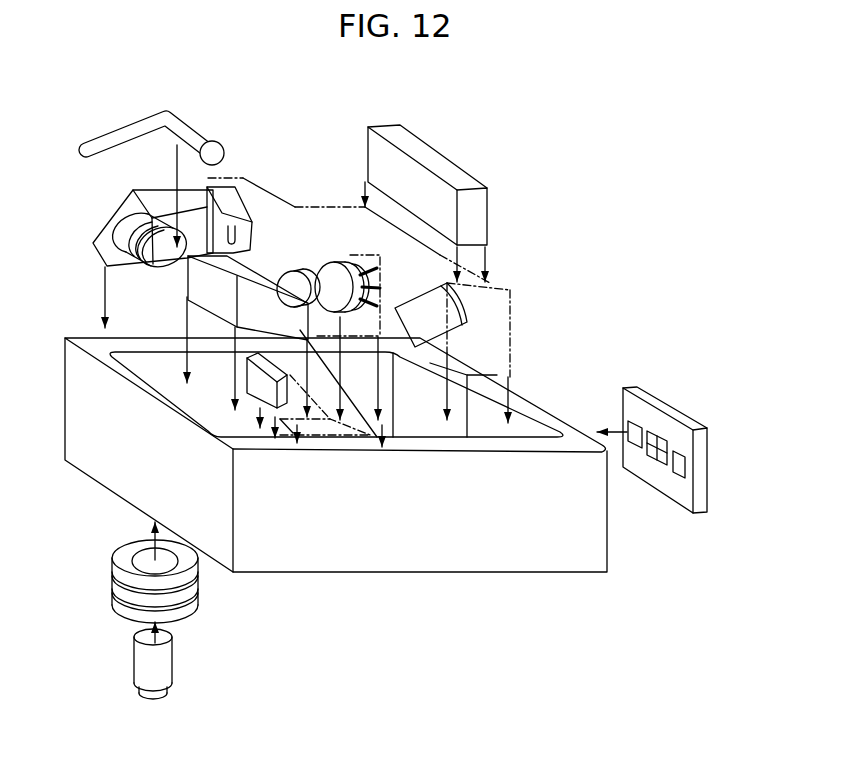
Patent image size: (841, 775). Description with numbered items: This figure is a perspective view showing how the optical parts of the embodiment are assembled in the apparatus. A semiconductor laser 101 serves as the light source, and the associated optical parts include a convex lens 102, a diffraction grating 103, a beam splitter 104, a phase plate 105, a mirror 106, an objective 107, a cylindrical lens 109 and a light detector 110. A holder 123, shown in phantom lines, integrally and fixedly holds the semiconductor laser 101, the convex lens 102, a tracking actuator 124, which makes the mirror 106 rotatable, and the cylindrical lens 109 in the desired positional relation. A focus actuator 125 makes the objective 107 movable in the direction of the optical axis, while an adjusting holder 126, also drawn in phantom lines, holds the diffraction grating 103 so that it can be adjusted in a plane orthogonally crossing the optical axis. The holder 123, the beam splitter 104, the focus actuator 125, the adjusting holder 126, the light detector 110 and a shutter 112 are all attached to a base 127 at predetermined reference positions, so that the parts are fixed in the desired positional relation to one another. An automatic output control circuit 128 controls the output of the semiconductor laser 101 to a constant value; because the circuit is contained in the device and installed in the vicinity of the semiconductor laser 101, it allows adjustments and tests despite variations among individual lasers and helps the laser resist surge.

The semiconductor laser 101 is at (343, 270).
The convex lens 102 is at (300, 265).
The diffraction grating 103 is at (245, 368).
The beam splitter 104 is at (258, 283).
The phase plate 105 is at (185, 287).
The mirror 106 is at (148, 260).
The objective 107 is at (165, 662).
The cylindrical lens 109 is at (422, 300).
The light detector 110 is at (652, 398).
The shutter 112 is at (196, 137).
The holder 123 is at (493, 290).
The tracking actuator 124 is at (110, 223).
The focus actuator 125 is at (112, 592).
The adjusting holder 126 is at (313, 425).
The base 127 is at (598, 567).
The automatic output control circuit 128 is at (437, 162).